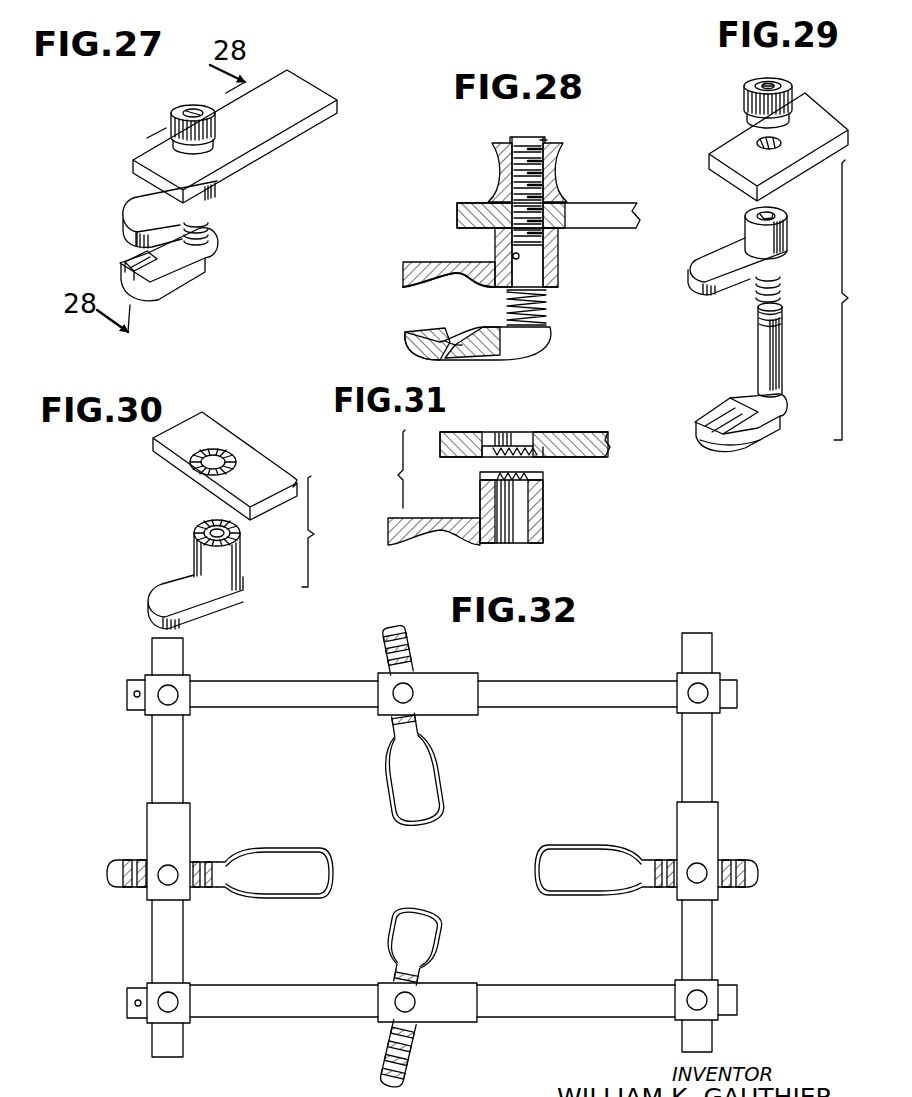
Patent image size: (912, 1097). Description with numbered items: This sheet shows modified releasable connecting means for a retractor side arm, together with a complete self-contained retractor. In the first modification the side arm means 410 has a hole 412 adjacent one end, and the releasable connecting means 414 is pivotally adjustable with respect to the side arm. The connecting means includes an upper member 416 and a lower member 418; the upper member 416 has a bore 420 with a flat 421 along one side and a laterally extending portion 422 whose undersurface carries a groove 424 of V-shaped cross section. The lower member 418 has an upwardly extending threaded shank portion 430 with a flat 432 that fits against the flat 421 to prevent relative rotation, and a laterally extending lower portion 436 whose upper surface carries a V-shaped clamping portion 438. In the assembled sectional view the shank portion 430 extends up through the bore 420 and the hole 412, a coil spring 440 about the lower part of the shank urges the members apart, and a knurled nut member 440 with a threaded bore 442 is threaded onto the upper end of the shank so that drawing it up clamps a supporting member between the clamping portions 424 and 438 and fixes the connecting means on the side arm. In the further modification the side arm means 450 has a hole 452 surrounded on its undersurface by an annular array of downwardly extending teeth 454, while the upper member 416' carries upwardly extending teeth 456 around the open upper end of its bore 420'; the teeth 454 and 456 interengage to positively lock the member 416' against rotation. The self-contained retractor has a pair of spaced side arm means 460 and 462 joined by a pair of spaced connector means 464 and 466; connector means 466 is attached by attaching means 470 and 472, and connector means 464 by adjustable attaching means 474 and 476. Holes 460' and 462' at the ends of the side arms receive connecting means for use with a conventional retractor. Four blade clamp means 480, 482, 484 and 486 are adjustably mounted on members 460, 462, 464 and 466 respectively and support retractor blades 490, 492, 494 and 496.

In FIG. 27, the side arm means 410 is at (313, 93).
In FIG. 28, the side arm means 410 is at (612, 203).
In FIG. 29, the side arm means 410 is at (778, 130).
In FIG. 28, the hole 412 is at (558, 247).
In FIG. 29, the hole 412 is at (780, 141).
In FIG. 27, the releasable connecting means 414 is at (190, 187).
In FIG. 28, the releasable connecting means 414 is at (507, 249).
In FIG. 29, the releasable connecting means 414 is at (760, 275).
In FIG. 27, the upper member 416 is at (186, 208).
In FIG. 28, the upper member 416 is at (501, 271).
In FIG. 29, the upper member 416 is at (755, 268).
In FIG. 30, the upper member 416' is at (222, 571).
In FIG. 31, the upper member 416' is at (502, 522).
In FIG. 27, the lower member 418 is at (170, 264).
In FIG. 28, the lower member 418 is at (504, 357).
In FIG. 29, the lower member 418 is at (747, 433).
In FIG. 28, the bore 420 is at (481, 248).
In FIG. 29, the bore 420 is at (767, 226).
In FIG. 31, the bore 420' is at (540, 522).
In FIG. 29, the flat 421 is at (784, 212).
In FIG. 27, the laterally extending portion 422 is at (155, 210).
In FIG. 28, the laterally extending portion 422 is at (441, 271).
In FIG. 29, the laterally extending portion 422 is at (700, 290).
In FIG. 27, the groove 424 is at (180, 227).
In FIG. 28, the groove 424 is at (460, 282).
In FIG. 27, the threaded shank portion 430 is at (198, 105).
In FIG. 28, the threaded shank portion 430 is at (528, 198).
In FIG. 29, the threaded shank portion 430 is at (797, 341).
In FIG. 29, the flat 432 is at (783, 305).
In FIG. 29, the laterally extending lower portion 436 is at (742, 446).
In FIG. 27, the clamping portion 438 is at (128, 268).
In FIG. 28, the clamping portion 438 is at (453, 360).
In FIG. 29, the clamping portion 438 is at (722, 410).
In FIG. 27, the nut member and coil spring 440 is at (175, 116).
In FIG. 28, the nut member and coil spring 440 is at (566, 152).
In FIG. 29, the nut member and coil spring 440 is at (748, 98).
In FIG. 28, the threaded bore 442 is at (570, 126).
In FIG. 29, the threaded bore 442 is at (768, 80).
In FIG. 30, the side arm means 450 is at (241, 464).
In FIG. 31, the side arm means 450 is at (533, 438).
In FIG. 30, the hole 452 is at (229, 452).
In FIG. 31, the hole 452 is at (530, 432).
In FIG. 31, the teeth 454 is at (540, 457).
In FIG. 30, the teeth 456 is at (243, 532).
In FIG. 31, the teeth 456 is at (541, 477).
In FIG. 32, the side arm means 460 is at (412, 712).
In FIG. 32, the hole 460' is at (116, 712).
In FIG. 32, the side arm means 462 is at (416, 1005).
In FIG. 32, the hole 462' is at (121, 1027).
In FIG. 32, the connector means 464 is at (184, 757).
In FIG. 32, the connector means 466 is at (704, 742).
In FIG. 32, the attaching means 470 is at (713, 671).
In FIG. 32, the attaching means 472 is at (716, 992).
In FIG. 32, the adjustable attaching means 474 is at (189, 691).
In FIG. 32, the adjustable attaching means 476 is at (186, 1011).
In FIG. 32, the blade clamp means 480 is at (460, 673).
In FIG. 32, the blade clamp means 482 is at (421, 1026).
In FIG. 32, the blade clamp means 484 is at (146, 822).
In FIG. 32, the blade clamp means 486 is at (720, 822).
In FIG. 32, the retractor blade 490 is at (426, 730).
In FIG. 32, the retractor blade 492 is at (439, 963).
In FIG. 32, the retractor blade 494 is at (237, 899).
In FIG. 32, the retractor blade 496 is at (633, 849).